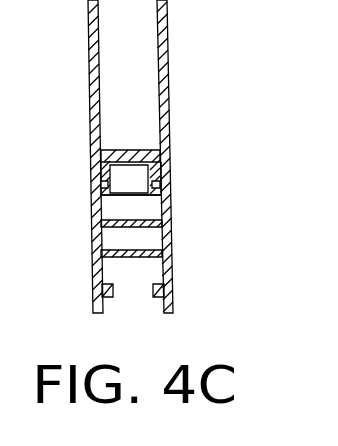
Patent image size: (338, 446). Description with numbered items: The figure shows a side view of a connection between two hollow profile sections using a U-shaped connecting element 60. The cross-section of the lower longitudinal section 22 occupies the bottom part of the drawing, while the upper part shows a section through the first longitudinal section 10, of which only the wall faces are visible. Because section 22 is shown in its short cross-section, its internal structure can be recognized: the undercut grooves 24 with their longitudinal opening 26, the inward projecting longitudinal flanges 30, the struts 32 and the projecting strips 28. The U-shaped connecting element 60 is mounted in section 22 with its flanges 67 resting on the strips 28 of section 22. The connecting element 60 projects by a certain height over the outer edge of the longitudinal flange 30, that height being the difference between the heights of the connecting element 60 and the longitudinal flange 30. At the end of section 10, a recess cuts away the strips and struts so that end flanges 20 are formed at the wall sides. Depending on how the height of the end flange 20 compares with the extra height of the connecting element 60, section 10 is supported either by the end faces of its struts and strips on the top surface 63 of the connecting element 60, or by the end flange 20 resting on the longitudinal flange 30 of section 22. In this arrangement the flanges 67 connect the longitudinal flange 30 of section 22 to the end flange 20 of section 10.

The longitudinal section 10 is at (167, 26).
The end flange 20 is at (152, 152).
The longitudinal section 22 is at (167, 273).
The undercut groove 24 is at (150, 207).
The longitudinal opening 26 is at (128, 192).
The strip 28 is at (96, 193).
The longitudinal flange 30 is at (160, 177).
The strut 32 is at (123, 226).
The connecting element 60 is at (98, 152).
The top surface 63 is at (142, 143).
The flange 67 is at (100, 174).